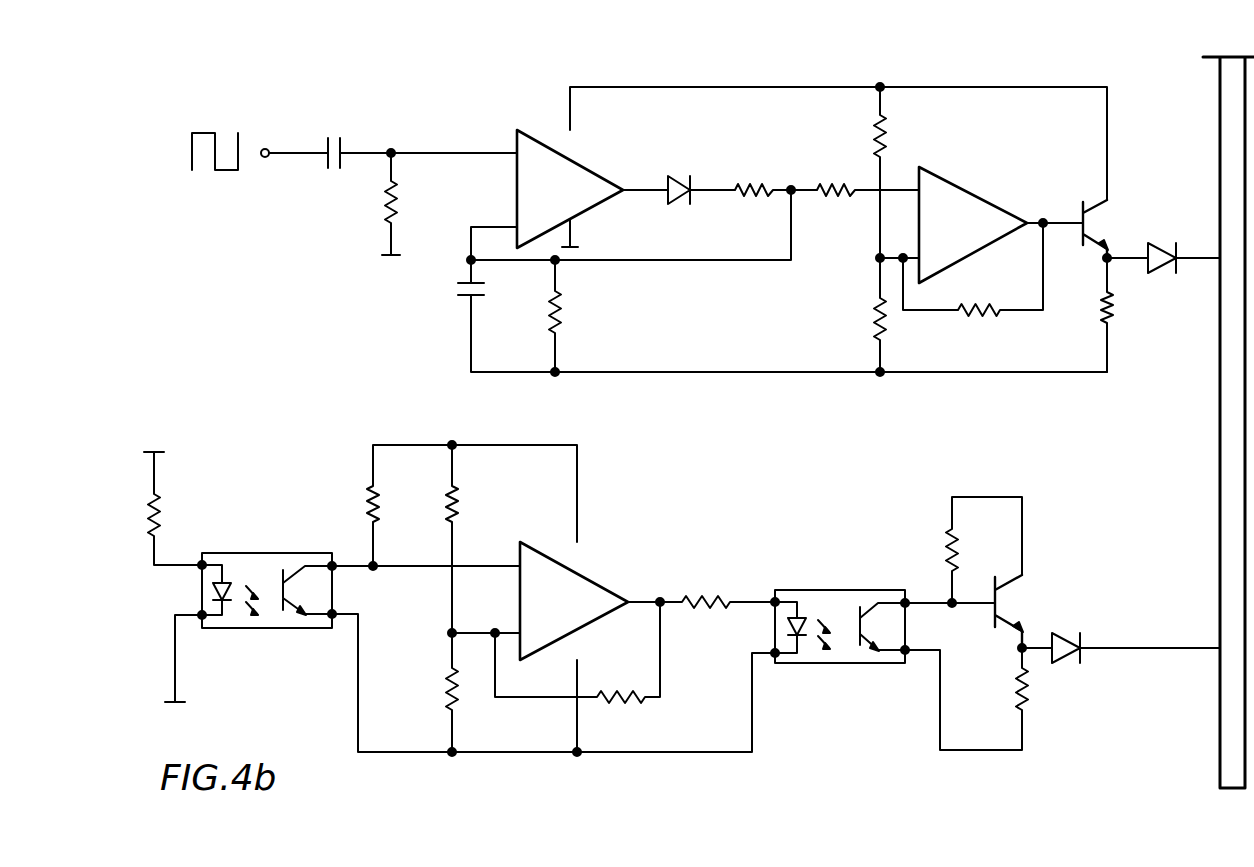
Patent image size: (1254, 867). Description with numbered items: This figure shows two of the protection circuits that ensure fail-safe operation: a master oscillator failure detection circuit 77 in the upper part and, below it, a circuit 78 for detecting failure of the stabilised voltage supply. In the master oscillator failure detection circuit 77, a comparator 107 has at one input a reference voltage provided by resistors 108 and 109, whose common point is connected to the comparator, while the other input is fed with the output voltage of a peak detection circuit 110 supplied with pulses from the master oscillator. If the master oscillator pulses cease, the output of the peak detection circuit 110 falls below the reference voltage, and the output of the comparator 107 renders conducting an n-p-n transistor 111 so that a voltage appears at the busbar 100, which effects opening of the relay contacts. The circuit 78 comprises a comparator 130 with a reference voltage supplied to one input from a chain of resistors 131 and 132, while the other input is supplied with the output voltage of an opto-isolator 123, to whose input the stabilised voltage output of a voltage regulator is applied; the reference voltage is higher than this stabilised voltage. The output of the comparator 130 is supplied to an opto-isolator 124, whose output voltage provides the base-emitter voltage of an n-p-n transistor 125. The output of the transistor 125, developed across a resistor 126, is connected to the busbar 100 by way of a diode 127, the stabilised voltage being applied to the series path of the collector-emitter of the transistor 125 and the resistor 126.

The master oscillator failure detection circuit 77 is at (298, 255).
The circuit for detecting failure of the stabilised voltage supply circuit 78 is at (298, 705).
The busbar 100 is at (1232, 494).
The comparator 107 is at (962, 202).
The resistor 108 is at (877, 130).
The resistor 109 is at (876, 315).
The peak detection circuit 110 is at (549, 116).
The n-p-n transistor 111 is at (1093, 200).
The opto-isolator 123 is at (263, 552).
The opto-isolator 124 is at (846, 590).
The n-p-n transistor 125 is at (990, 613).
The resistor 126 is at (1035, 690).
The diode 127 is at (1063, 640).
The comparator 130 is at (582, 590).
The resistor 131 is at (444, 501).
The resistor 132 is at (444, 688).